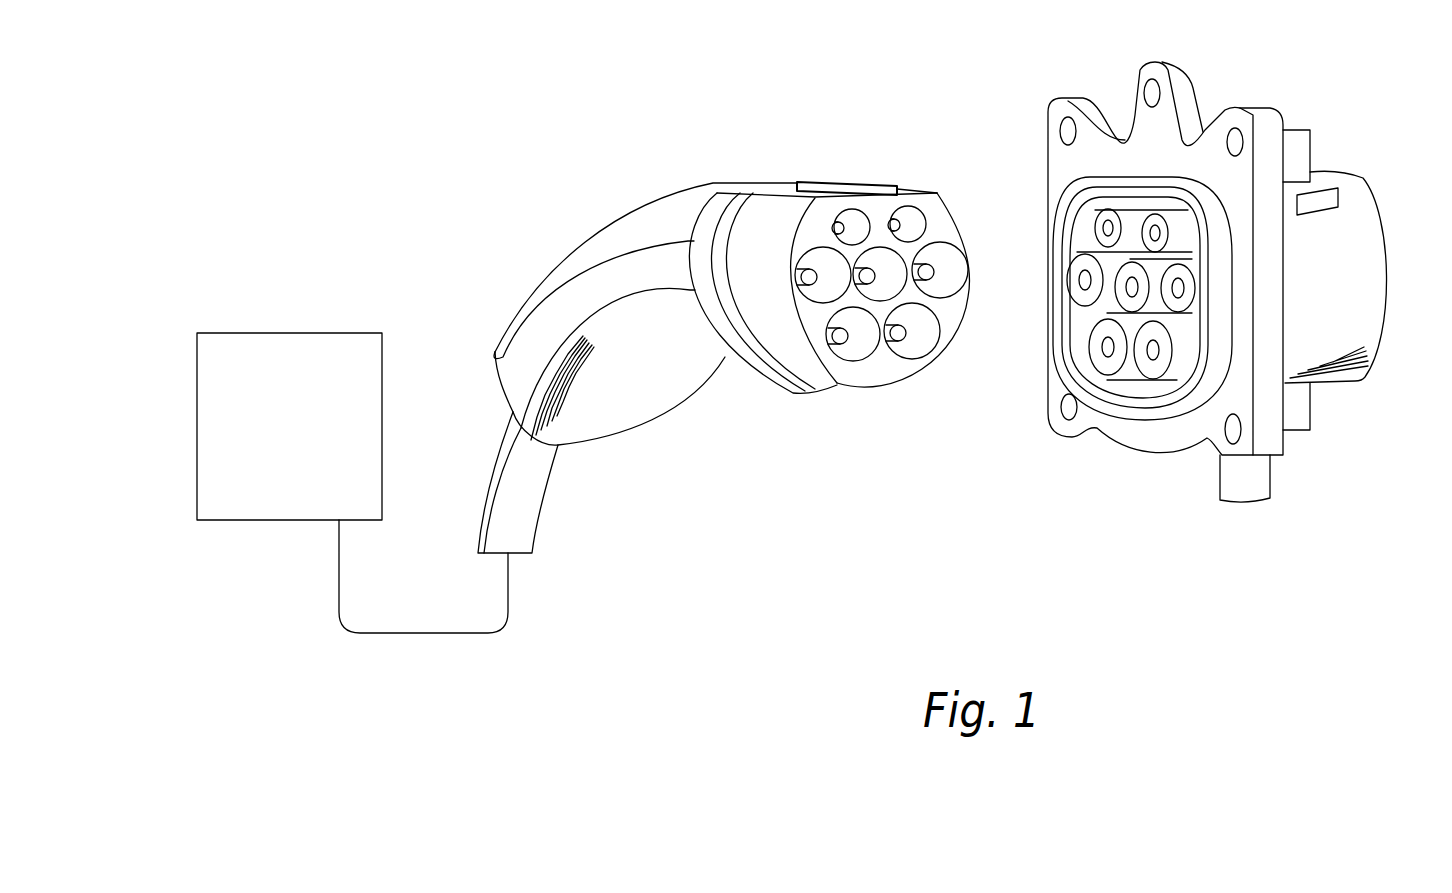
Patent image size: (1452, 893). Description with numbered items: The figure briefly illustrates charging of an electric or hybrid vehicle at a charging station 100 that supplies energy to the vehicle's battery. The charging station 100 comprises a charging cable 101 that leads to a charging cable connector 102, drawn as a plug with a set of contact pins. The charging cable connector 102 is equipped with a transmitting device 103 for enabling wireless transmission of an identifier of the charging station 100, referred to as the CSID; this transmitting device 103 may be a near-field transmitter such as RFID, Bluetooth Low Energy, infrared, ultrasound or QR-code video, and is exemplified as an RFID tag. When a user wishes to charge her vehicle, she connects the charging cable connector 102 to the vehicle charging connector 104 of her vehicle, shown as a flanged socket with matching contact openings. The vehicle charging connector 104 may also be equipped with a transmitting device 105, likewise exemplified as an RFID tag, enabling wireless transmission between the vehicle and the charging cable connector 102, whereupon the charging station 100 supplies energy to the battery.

The charging station 100 is at (197, 422).
The charging cable 101 is at (428, 633).
The charging cable connector 102 is at (835, 387).
The transmitting device 103 is at (855, 180).
The vehicle charging connector 104 is at (1155, 455).
The transmitting device 105 is at (1328, 198).